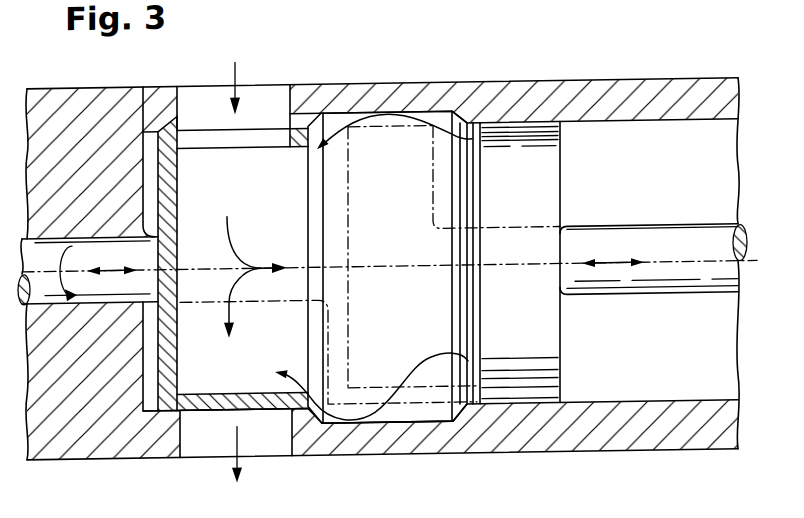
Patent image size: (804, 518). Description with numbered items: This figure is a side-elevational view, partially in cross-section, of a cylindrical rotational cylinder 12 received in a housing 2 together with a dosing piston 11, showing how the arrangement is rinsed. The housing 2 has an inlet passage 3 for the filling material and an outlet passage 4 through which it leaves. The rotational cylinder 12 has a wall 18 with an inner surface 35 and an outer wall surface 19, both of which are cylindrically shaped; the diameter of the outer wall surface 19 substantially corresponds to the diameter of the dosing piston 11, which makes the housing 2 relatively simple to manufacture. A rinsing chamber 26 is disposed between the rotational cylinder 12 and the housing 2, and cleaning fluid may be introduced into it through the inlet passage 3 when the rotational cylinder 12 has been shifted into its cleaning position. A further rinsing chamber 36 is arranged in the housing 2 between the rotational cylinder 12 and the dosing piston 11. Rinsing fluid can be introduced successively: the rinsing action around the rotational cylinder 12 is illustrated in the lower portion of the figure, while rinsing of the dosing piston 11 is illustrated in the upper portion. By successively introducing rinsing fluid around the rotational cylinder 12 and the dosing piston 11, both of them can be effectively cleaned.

The housing 2 is at (575, 103).
The inlet passage 3 is at (201, 102).
The outlet passage 4 is at (214, 438).
The dosing piston 11 is at (340, 99).
The rotational cylinder 12 is at (203, 415).
The wall 18 is at (263, 410).
The outer wall surface 19 is at (278, 410).
The rinsing chamber 26 is at (144, 85).
The inner surface 35 is at (258, 389).
The further rinsing chamber 36 is at (430, 114).